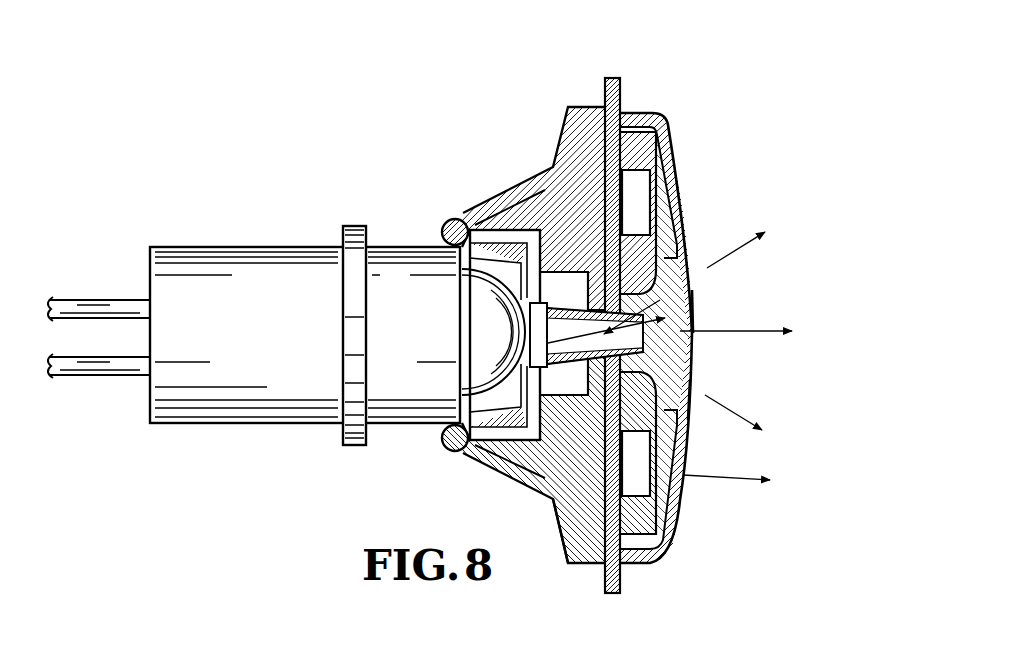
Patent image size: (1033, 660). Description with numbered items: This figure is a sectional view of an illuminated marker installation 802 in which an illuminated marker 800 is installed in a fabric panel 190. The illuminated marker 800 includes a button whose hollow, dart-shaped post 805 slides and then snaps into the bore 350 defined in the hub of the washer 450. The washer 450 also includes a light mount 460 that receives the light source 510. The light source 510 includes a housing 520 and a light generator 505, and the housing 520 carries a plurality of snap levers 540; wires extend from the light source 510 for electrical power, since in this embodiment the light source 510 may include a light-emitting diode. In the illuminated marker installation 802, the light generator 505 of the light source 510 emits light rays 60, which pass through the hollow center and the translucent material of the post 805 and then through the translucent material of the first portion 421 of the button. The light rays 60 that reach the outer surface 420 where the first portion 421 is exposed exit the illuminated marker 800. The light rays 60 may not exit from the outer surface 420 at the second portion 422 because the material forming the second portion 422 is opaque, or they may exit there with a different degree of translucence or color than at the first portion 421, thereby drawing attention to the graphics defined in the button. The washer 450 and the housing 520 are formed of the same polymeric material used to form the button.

The illuminated marker installation 802 is at (303, 126).
The light source 510 is at (202, 243).
The housing 520 is at (238, 425).
The snap levers 540 is at (470, 458).
The light generator 505 is at (482, 307).
The washer 450 is at (550, 165).
The light mount 460 is at (510, 473).
The post 805 is at (538, 378).
The bore 350 is at (660, 300).
The illuminated marker 800 is at (697, 370).
The outer surface 420 is at (677, 140).
The first portion 421 is at (695, 323).
The second portion 422 is at (692, 420).
The light rays 60 is at (733, 248).
The panel 190 is at (622, 583).